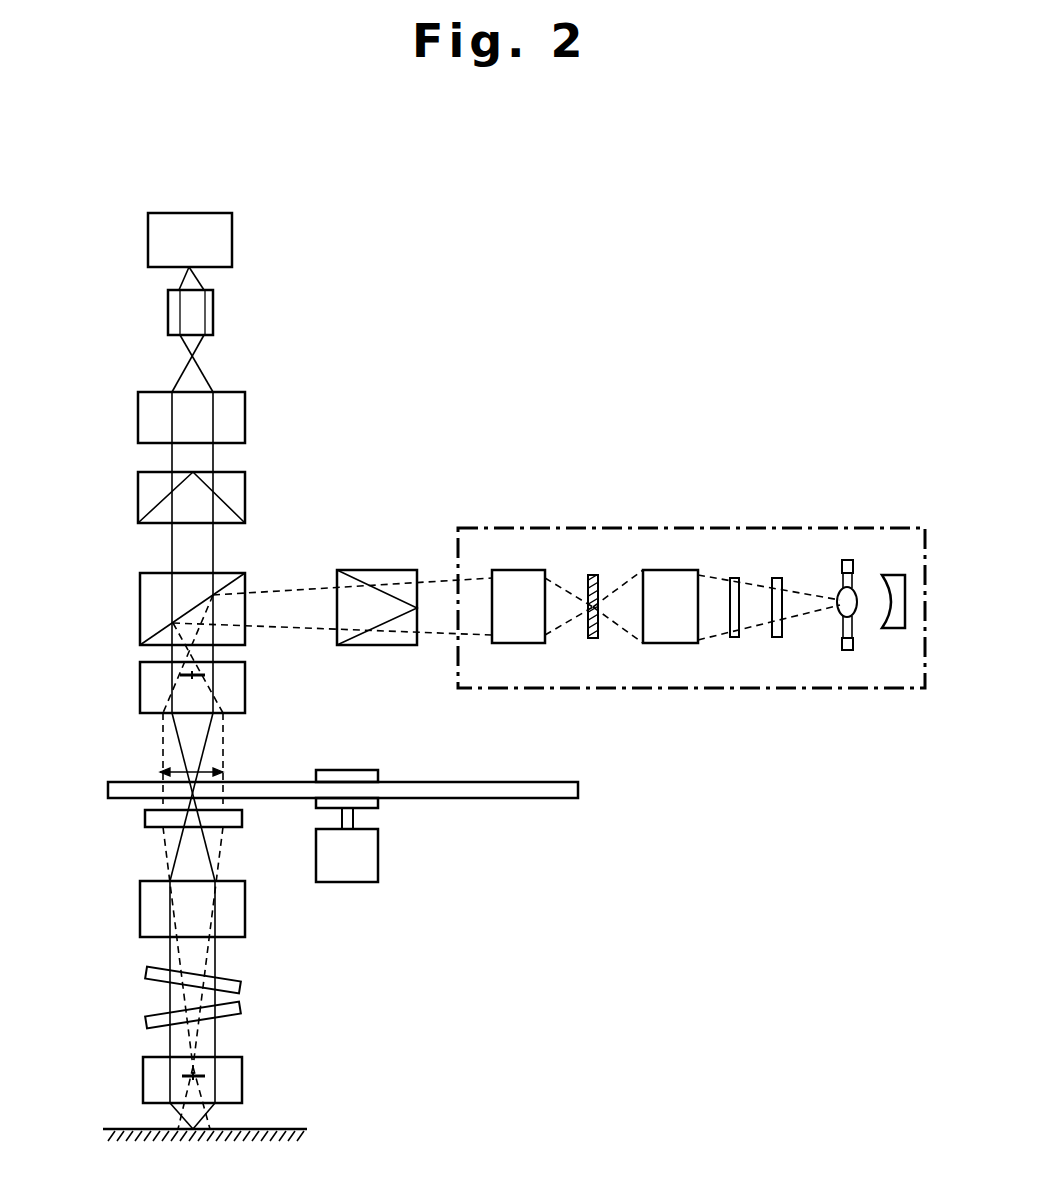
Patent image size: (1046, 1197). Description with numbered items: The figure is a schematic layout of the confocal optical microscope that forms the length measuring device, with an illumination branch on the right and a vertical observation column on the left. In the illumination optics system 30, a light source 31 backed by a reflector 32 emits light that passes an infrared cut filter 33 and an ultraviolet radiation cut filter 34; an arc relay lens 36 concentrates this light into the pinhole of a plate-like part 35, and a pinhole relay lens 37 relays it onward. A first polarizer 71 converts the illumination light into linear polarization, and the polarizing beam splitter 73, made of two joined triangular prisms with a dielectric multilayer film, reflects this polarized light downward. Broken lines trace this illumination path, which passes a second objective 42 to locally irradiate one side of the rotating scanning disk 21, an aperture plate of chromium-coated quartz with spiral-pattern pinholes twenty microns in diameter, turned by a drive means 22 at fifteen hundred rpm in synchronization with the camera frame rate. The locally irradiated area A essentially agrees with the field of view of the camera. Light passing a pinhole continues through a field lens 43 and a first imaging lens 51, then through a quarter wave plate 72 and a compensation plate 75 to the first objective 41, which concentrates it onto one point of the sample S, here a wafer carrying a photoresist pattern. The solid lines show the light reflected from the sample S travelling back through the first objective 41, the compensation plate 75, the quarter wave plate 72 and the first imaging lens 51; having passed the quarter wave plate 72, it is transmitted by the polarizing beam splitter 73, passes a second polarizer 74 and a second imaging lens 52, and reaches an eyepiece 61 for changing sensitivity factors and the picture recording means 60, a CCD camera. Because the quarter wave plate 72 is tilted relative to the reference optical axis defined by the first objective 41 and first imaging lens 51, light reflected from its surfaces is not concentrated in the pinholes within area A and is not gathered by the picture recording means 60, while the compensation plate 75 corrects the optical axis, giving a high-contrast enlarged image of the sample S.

The picture recording means 60 is at (232, 237).
The eyepiece 61 is at (213, 323).
The second imaging lens 52 is at (245, 407).
The second polarizer 74 is at (245, 497).
The polarizing beam splitter 73 is at (140, 595).
The second objective 42 is at (245, 683).
The locally irradiated area A is at (177, 770).
The rotating scanning disk 21 is at (517, 788).
The drive means 22 is at (378, 858).
The field lens 43 is at (145, 818).
The first imaging lens 51 is at (140, 892).
The quarter wave plate 72 is at (242, 987).
The compensation plate 75 is at (242, 1004).
The first objective 41 is at (143, 1080).
The sample S is at (263, 1129).
The first polarizer 71 is at (387, 570).
The illumination optics system 30 is at (700, 528).
The pinhole relay lens 37 is at (525, 570).
The plate-like part 35 is at (595, 575).
The arc relay lens 36 is at (677, 643).
The ultraviolet radiation cut filter 34 is at (738, 637).
The infrared cut filter 33 is at (778, 578).
The light source 31 is at (853, 650).
The reflector 32 is at (893, 583).